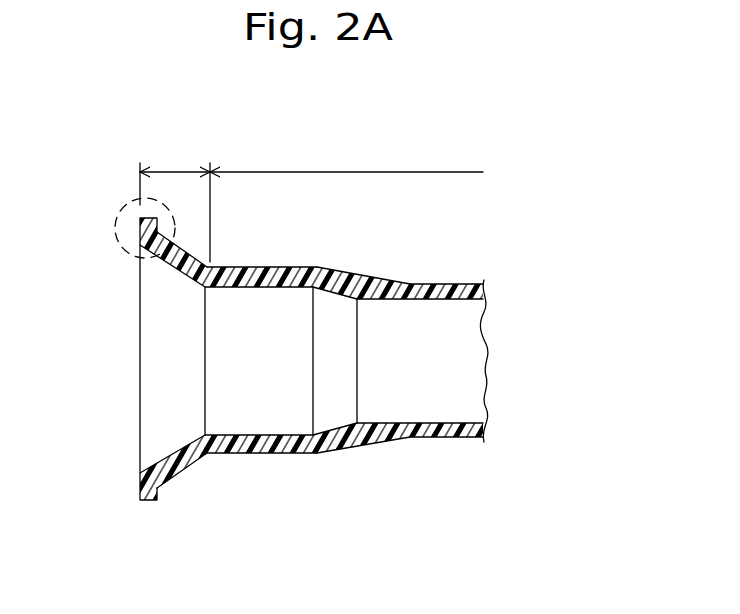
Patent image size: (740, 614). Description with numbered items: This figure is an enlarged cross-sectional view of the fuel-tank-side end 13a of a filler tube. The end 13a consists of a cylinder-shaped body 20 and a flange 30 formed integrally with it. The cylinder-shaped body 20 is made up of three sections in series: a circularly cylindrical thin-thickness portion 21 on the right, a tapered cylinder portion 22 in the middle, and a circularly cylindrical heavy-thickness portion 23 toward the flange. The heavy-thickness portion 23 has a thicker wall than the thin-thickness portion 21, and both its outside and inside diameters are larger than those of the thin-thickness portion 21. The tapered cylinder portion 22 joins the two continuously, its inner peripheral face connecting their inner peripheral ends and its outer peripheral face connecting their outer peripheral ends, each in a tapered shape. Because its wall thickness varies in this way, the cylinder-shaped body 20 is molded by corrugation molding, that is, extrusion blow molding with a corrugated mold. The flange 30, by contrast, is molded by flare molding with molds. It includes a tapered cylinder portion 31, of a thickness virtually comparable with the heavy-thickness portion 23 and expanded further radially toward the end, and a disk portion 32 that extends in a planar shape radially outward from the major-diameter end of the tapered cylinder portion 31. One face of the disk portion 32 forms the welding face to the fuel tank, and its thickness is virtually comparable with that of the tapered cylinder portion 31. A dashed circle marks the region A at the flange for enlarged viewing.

The end of the filler tube 13a is at (486, 246).
The cylinder-shaped body 20 is at (346, 148).
The thin-thickness portion 21 is at (440, 435).
The tapered cylinder portion 22 is at (338, 440).
The heavy-thickness portion 23 is at (267, 453).
The flange 30 is at (175, 193).
The tapered cylinder portion 31 is at (178, 473).
The disk portion 32 is at (143, 502).
The detail region A is at (112, 228).